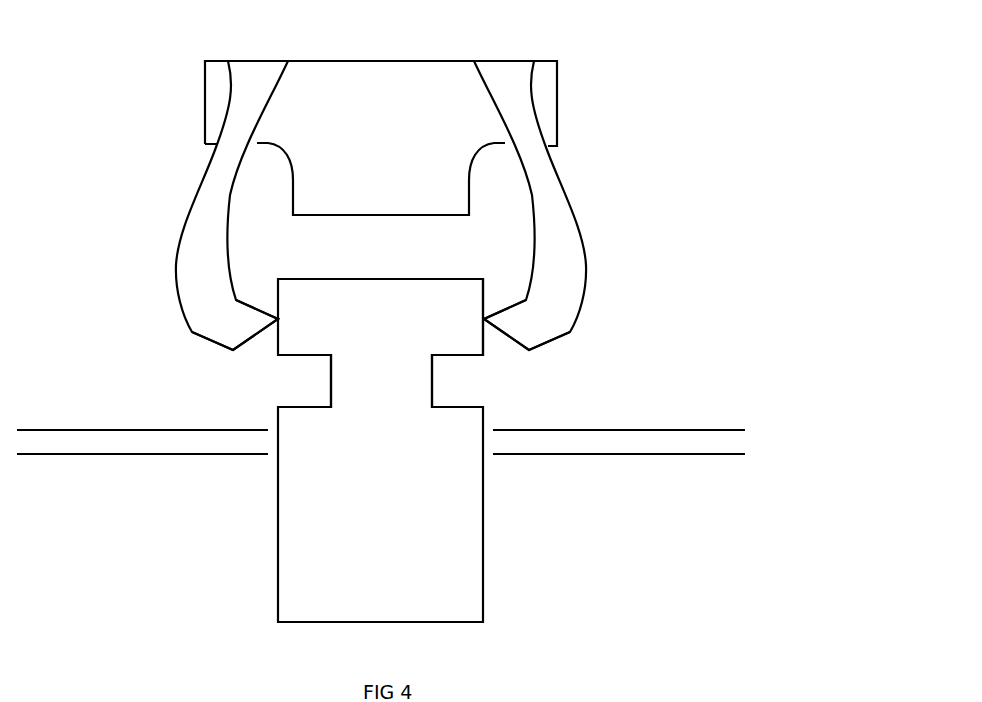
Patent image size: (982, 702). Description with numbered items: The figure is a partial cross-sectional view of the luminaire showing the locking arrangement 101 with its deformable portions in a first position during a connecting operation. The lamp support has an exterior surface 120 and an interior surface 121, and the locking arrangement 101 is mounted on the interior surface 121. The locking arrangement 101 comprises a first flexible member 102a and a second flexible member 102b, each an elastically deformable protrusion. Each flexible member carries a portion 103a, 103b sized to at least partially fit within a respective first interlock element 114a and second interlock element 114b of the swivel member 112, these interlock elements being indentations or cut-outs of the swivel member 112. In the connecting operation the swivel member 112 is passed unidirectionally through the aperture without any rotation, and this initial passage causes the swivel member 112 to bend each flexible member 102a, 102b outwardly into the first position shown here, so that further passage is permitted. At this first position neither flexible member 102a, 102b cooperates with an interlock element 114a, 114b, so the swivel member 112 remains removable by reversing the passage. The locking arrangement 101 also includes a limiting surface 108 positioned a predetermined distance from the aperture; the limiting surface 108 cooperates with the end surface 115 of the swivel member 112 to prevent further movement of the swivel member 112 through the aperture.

The locking arrangement 101 is at (558, 103).
The first flexible member 102a is at (180, 225).
The second flexible member 102b is at (573, 205).
The portion of first flexible member 103a is at (185, 320).
The portion of second flexible member 103b is at (573, 317).
The limiting surface 108 is at (365, 215).
The swivel member 112 is at (275, 538).
The end surface 115 is at (417, 281).
The first interlock element 114a is at (295, 382).
The second interlock element 114b is at (457, 377).
The exterior surface 120 is at (697, 455).
The interior surface 121 is at (618, 428).